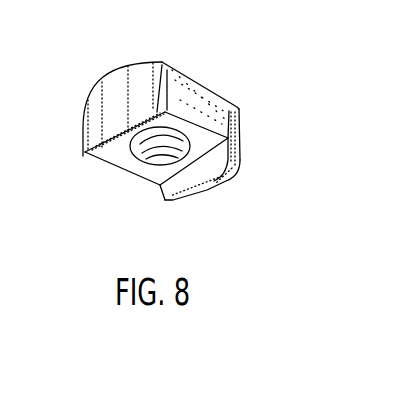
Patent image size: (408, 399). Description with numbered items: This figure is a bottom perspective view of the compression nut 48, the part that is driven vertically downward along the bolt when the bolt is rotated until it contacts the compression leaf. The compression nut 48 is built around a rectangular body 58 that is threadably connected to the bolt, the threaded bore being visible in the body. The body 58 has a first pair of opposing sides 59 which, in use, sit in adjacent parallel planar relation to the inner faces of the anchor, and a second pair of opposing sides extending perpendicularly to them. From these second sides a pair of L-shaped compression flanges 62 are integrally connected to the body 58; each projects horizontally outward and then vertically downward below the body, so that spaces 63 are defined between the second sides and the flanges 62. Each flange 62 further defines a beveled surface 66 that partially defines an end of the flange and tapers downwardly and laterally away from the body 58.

The compression nut 48 is at (73, 112).
The rectangular body 58 is at (212, 91).
The first pair of opposing sides 59 is at (123, 170).
The L-shaped compression flanges 62 is at (76, 163).
The spaces 63 is at (171, 64).
The beveled surface 66 is at (198, 190).